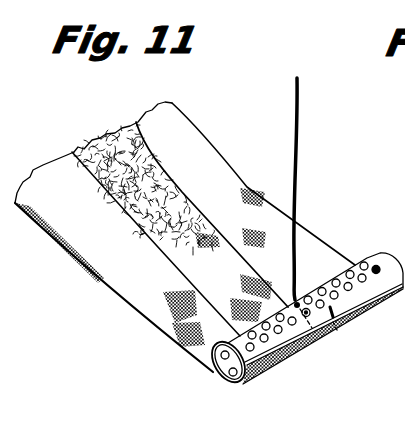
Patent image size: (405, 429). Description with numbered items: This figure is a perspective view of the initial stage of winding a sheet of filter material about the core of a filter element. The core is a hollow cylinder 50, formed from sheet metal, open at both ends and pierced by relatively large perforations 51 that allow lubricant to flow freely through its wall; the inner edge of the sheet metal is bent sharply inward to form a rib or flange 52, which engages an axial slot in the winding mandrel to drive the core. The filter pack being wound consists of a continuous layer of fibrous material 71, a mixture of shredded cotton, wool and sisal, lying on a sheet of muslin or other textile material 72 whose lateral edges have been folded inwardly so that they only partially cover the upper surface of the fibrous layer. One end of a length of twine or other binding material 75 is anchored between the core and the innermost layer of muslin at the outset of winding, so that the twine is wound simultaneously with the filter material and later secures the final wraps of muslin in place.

The hollow cylinder 50 is at (274, 301).
The perforations 51 is at (366, 263).
The rib or flange 52 is at (215, 355).
The fibrous material 71 is at (93, 150).
The textile material 72 is at (178, 121).
The twine or binding material 75 is at (298, 177).